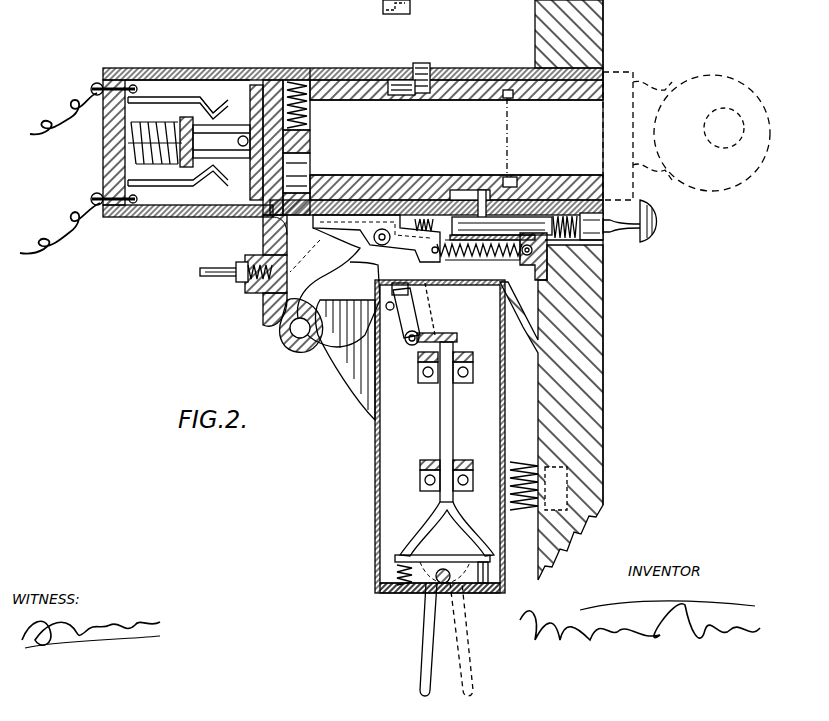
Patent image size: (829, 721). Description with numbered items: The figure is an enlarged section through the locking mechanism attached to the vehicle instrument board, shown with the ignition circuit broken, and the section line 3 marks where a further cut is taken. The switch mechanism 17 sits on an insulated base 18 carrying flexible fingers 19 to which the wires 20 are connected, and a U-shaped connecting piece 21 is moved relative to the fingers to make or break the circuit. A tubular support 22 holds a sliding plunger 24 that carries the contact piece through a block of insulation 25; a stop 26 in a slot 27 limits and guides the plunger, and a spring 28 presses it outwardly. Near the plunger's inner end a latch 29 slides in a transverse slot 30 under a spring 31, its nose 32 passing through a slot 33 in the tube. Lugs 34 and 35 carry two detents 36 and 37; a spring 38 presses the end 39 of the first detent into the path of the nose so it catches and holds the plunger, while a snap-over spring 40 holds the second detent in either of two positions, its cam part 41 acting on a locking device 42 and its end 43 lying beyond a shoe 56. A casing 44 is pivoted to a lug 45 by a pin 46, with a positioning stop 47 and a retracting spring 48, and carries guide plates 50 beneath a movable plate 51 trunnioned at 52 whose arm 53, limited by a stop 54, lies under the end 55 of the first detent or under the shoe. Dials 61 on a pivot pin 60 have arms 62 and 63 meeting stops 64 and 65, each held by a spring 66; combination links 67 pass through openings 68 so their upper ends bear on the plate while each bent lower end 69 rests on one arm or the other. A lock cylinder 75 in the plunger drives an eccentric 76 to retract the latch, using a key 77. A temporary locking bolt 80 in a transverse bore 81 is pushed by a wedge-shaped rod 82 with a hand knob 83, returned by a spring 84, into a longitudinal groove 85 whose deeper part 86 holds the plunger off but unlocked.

The section line 3 is at (310, 68).
The switch mechanism 17 is at (207, 110).
The insulated base 18 is at (103, 152).
The flexible fingers 19 is at (168, 98).
The wires 20 is at (63, 100).
The U-shaped connecting piece 21 is at (230, 122).
The support 22 is at (122, 70).
The plunger 24 is at (472, 80).
The block of insulation 25 is at (252, 190).
The stop 26 is at (440, 68).
The slot 27 is at (404, 82).
The spring 28 is at (140, 120).
The latch 29 is at (258, 168).
The transverse slot 30 is at (322, 70).
The spring 31 is at (292, 85).
The nose 32 is at (383, 12).
The slot 33 is at (360, 208).
The lug 34 is at (396, 198).
The lug 35 is at (480, 255).
The detent 36 is at (381, 214).
The detent 37 is at (376, 265).
The spring 38 is at (436, 224).
The end 39 is at (326, 208).
The snap-over spring 40 is at (500, 255).
The cam part 41 is at (272, 304).
The locking device 42 is at (205, 276).
The end 43 is at (238, 278).
The casing 44 is at (376, 470).
The lug 45 is at (275, 325).
The pin 46 is at (282, 350).
The positioning stop 47 is at (540, 318).
The retracting spring 48 is at (525, 470).
The guide plates 50 is at (470, 368).
The movable plate 51 is at (445, 333).
The pivot 52 is at (412, 345).
The arm 53 is at (408, 304).
The stop 54 is at (387, 309).
The end 55 is at (438, 276).
The shoe 56 is at (390, 296).
The pivot pin 60 is at (466, 590).
The dials 61 is at (428, 628).
The arm 62 is at (397, 553).
The arm 63 is at (490, 560).
The stop 64 is at (395, 584).
The stop 65 is at (488, 574).
The spring 66 is at (395, 566).
The combination link 67 is at (453, 420).
The openings 68 is at (464, 356).
The bent lower end 69 is at (422, 537).
The lock cylinder 75 is at (478, 113).
The eccentric 76 is at (312, 165).
The key 77 is at (702, 70).
The temporary locking bolt 80 is at (507, 177).
The transverse bore 81 is at (496, 220).
The wedge-shaped rod 82 is at (563, 213).
The hand knob 83 is at (660, 223).
The spring 84 is at (572, 244).
The longitudinal groove 85 is at (462, 190).
The deeper part 86 is at (481, 192).